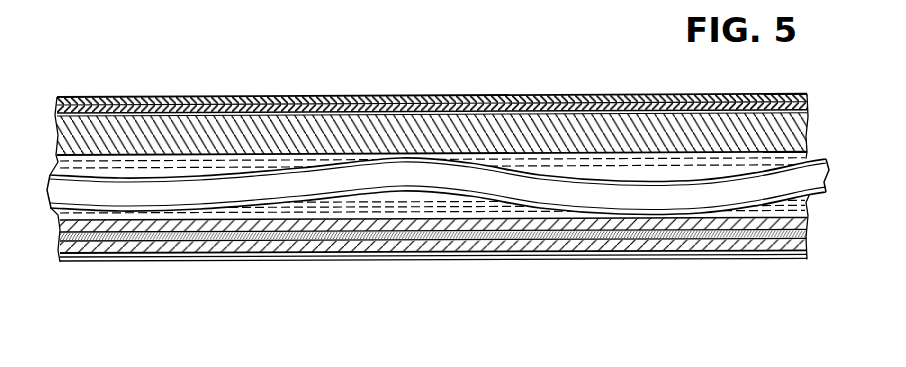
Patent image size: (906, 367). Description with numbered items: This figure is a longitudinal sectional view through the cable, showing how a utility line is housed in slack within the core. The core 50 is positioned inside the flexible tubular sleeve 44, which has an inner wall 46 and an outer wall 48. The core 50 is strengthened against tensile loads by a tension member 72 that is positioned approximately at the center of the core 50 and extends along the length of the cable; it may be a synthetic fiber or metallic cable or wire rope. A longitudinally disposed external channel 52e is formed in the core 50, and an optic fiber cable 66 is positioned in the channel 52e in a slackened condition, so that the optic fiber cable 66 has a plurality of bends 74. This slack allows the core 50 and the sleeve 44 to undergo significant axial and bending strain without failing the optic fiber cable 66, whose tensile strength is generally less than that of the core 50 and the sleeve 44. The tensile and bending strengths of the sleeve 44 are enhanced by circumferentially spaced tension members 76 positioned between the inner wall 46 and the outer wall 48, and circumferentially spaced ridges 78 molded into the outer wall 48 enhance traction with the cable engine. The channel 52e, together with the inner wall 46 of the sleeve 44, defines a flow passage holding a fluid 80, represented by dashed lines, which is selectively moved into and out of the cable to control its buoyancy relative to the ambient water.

The core 50 is at (245, 126).
The tension member 72 is at (603, 96).
The optic fiber cable 66 is at (503, 178).
The fluid 80 is at (787, 202).
The bends 74 is at (163, 213).
The tension members 76 is at (240, 233).
The ridges 78 is at (325, 253).
The channel 52e is at (445, 205).
The flexible tubular sleeve 44 is at (540, 250).
The outer wall 48 is at (687, 247).
The inner wall 46 is at (740, 212).